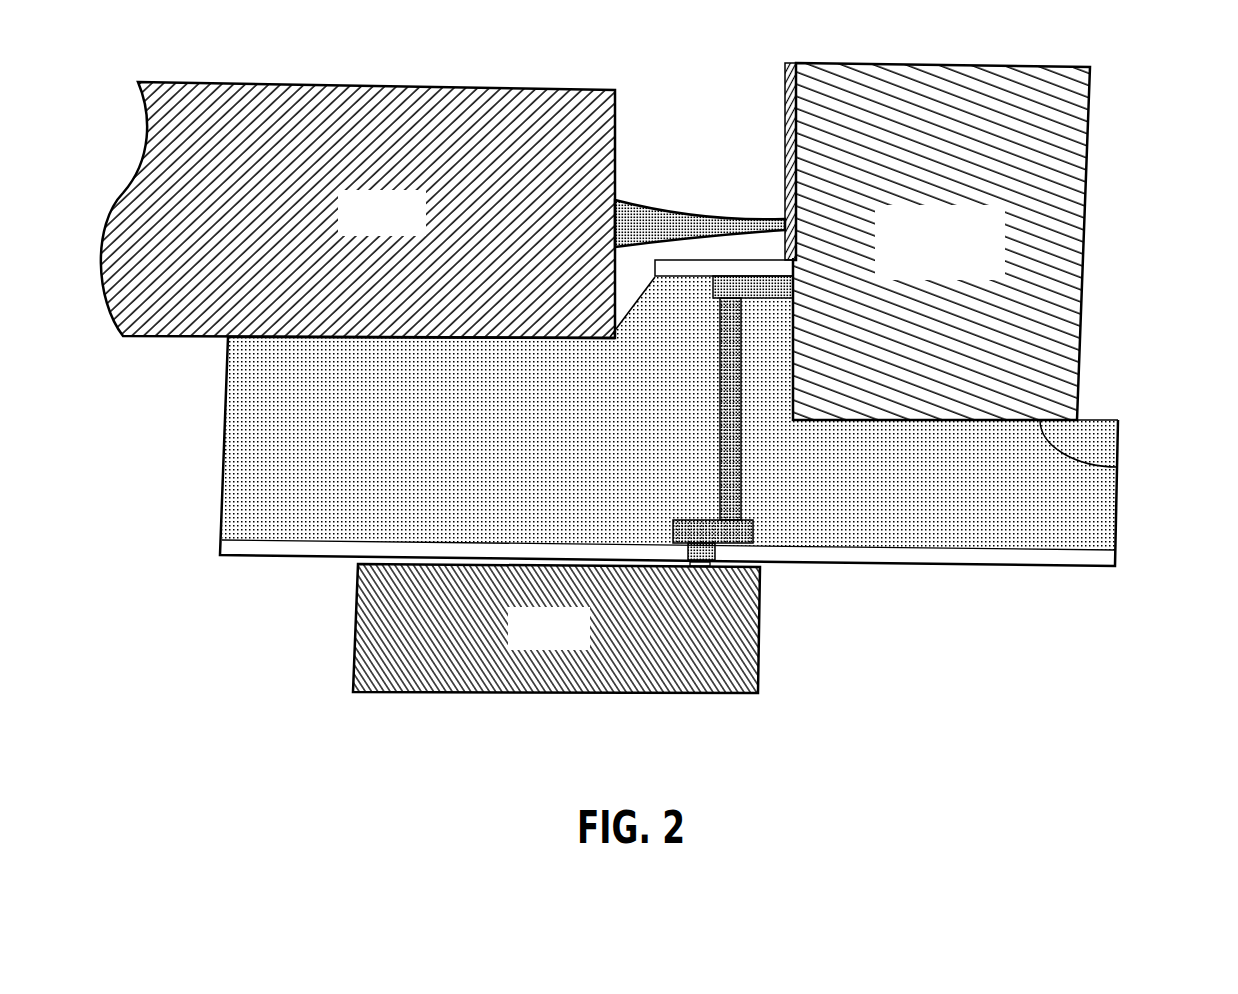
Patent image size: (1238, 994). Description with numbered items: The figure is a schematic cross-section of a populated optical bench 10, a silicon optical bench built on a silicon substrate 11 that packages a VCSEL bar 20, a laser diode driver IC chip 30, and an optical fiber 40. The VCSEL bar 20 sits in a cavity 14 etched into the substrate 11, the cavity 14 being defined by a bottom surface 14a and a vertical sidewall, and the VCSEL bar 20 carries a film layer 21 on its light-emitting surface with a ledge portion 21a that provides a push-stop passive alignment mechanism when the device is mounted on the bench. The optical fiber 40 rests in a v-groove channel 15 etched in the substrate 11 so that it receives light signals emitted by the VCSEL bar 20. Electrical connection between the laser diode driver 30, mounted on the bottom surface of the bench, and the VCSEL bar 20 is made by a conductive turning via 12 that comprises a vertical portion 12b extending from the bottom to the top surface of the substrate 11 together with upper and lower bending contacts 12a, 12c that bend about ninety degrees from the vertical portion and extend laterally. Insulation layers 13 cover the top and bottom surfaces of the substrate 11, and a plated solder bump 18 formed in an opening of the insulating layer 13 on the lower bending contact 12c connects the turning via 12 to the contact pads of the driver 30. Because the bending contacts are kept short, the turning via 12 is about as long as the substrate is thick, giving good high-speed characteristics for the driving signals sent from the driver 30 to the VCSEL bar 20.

The optical bench 10 is at (223, 460).
The silicon substrate 11 is at (292, 401).
The electrical turning via 12 is at (732, 436).
The upper bending contact 12a is at (715, 294).
The vertical portion of turning via 12b is at (733, 363).
The lower bending contact 12c is at (693, 522).
The insulation layer 13 is at (667, 270).
The cavity 14 is at (1088, 390).
The bottom surface of cavity 14a is at (1118, 468).
The v-groove channel 15 is at (466, 342).
The plated solder bump 18 is at (693, 558).
The VCSEL bar 20 is at (1088, 254).
The film layer 21 is at (784, 110).
The ledge portion 21a is at (797, 262).
The laser diode driver IC chip 30 is at (343, 646).
The optical fiber 40 is at (378, 82).